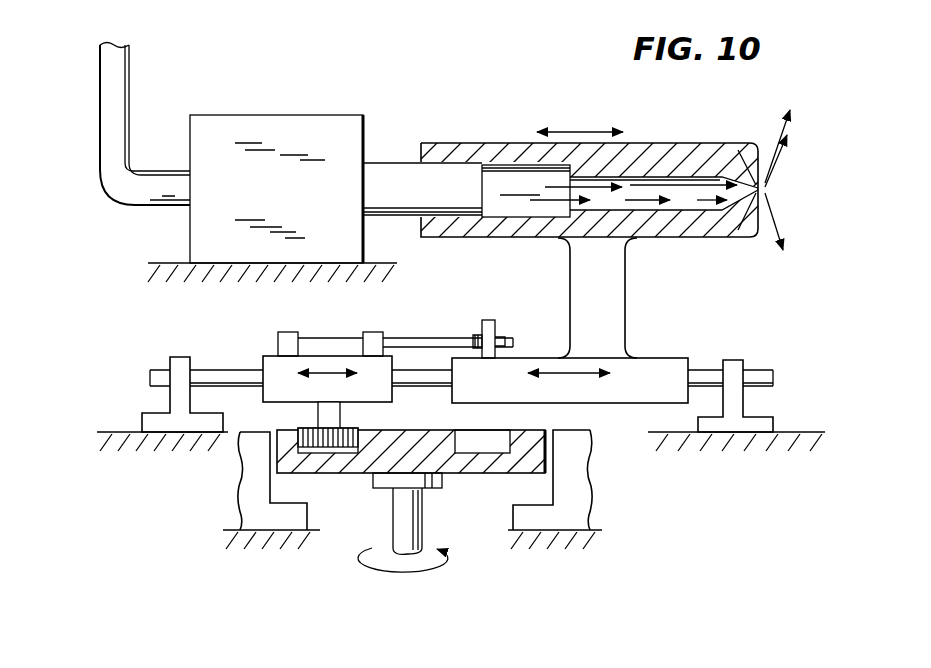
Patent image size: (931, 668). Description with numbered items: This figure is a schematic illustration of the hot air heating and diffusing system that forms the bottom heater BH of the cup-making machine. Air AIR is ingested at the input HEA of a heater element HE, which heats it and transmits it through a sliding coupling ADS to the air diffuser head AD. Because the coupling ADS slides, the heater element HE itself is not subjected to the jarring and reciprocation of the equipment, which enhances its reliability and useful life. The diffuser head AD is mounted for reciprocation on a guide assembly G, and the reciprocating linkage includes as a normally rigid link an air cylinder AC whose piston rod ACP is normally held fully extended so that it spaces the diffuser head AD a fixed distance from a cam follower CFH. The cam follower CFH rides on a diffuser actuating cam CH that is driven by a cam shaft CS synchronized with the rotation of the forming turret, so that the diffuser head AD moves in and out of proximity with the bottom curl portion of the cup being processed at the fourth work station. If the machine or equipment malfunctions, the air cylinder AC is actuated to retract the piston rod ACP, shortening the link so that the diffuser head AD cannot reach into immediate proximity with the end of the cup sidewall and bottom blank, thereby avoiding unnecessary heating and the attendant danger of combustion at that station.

The air AIR is at (113, 108).
The heater element input HEA is at (129, 78).
The heater element HE is at (283, 201).
The sliding coupling ADS is at (462, 150).
The bottom heater BH is at (555, 118).
The air diffuser head AD is at (717, 143).
The air cylinder AC is at (340, 338).
The piston rod ACP is at (470, 316).
The guide assembly G is at (704, 370).
The cam follower CFH is at (345, 432).
The diffuser actuating cam CH is at (353, 467).
The cam shaft CS is at (422, 548).